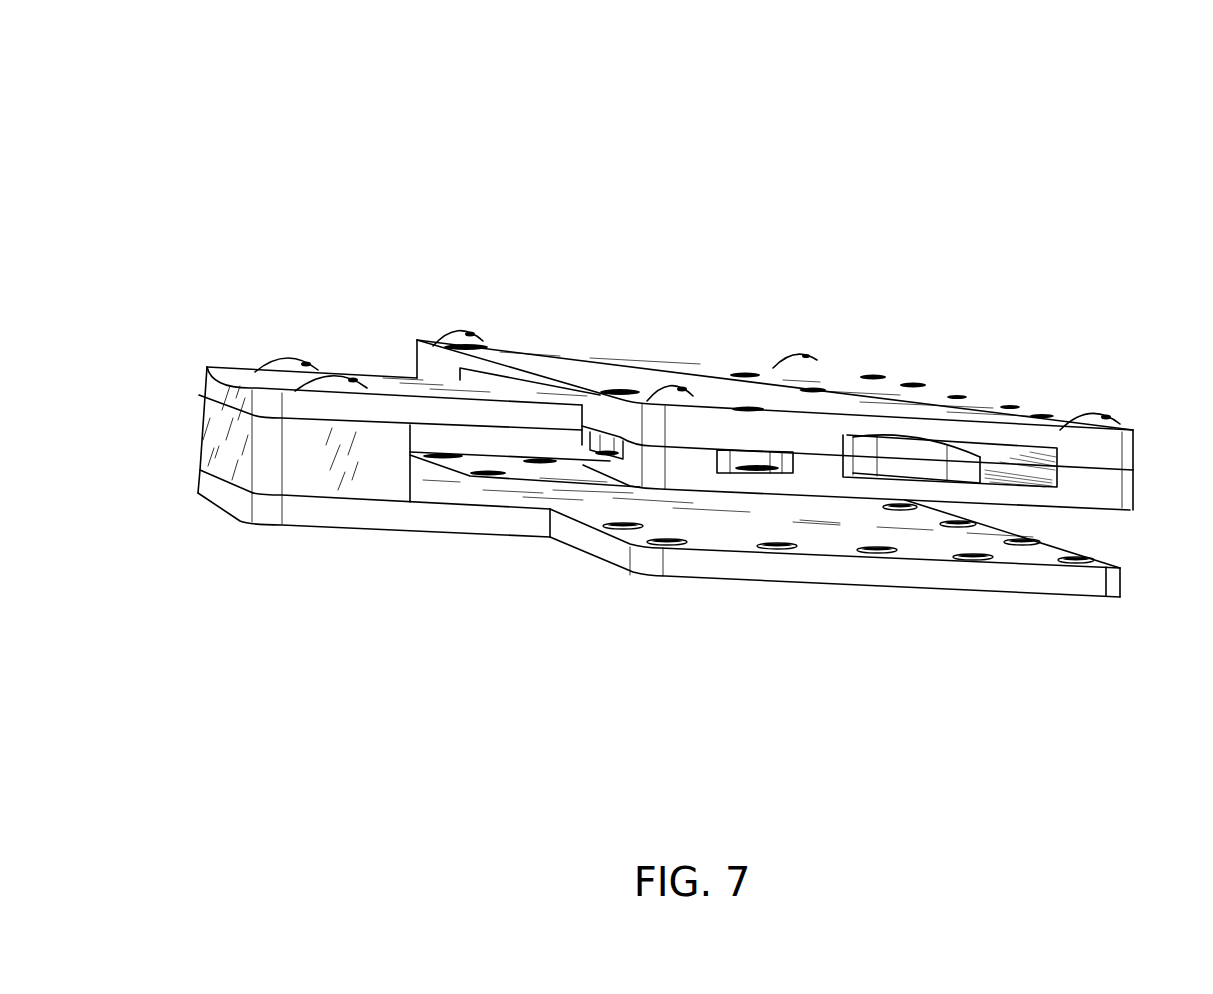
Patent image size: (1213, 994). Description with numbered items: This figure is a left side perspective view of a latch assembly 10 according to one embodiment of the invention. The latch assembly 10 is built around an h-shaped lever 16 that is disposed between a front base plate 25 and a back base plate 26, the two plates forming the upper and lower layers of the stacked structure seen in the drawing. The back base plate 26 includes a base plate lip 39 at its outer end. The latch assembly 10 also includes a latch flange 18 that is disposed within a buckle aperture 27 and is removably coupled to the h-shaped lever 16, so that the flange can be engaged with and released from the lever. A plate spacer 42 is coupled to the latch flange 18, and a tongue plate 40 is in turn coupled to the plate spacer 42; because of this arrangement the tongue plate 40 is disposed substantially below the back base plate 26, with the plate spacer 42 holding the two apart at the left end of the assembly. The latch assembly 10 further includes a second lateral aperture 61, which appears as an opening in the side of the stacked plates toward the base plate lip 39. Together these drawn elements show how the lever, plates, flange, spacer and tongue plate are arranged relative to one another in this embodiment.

The latch assembly 10 is at (632, 133).
The h-shaped lever 16 is at (893, 473).
The latch flange 18 is at (390, 384).
The front base plate 25 is at (611, 366).
The back base plate 26 is at (748, 485).
The buckle aperture 27 is at (567, 452).
The base plate lip 39 is at (1108, 492).
The tongue plate 40 is at (442, 519).
The plate spacer 42 is at (303, 478).
The second lateral aperture 61 is at (1004, 478).